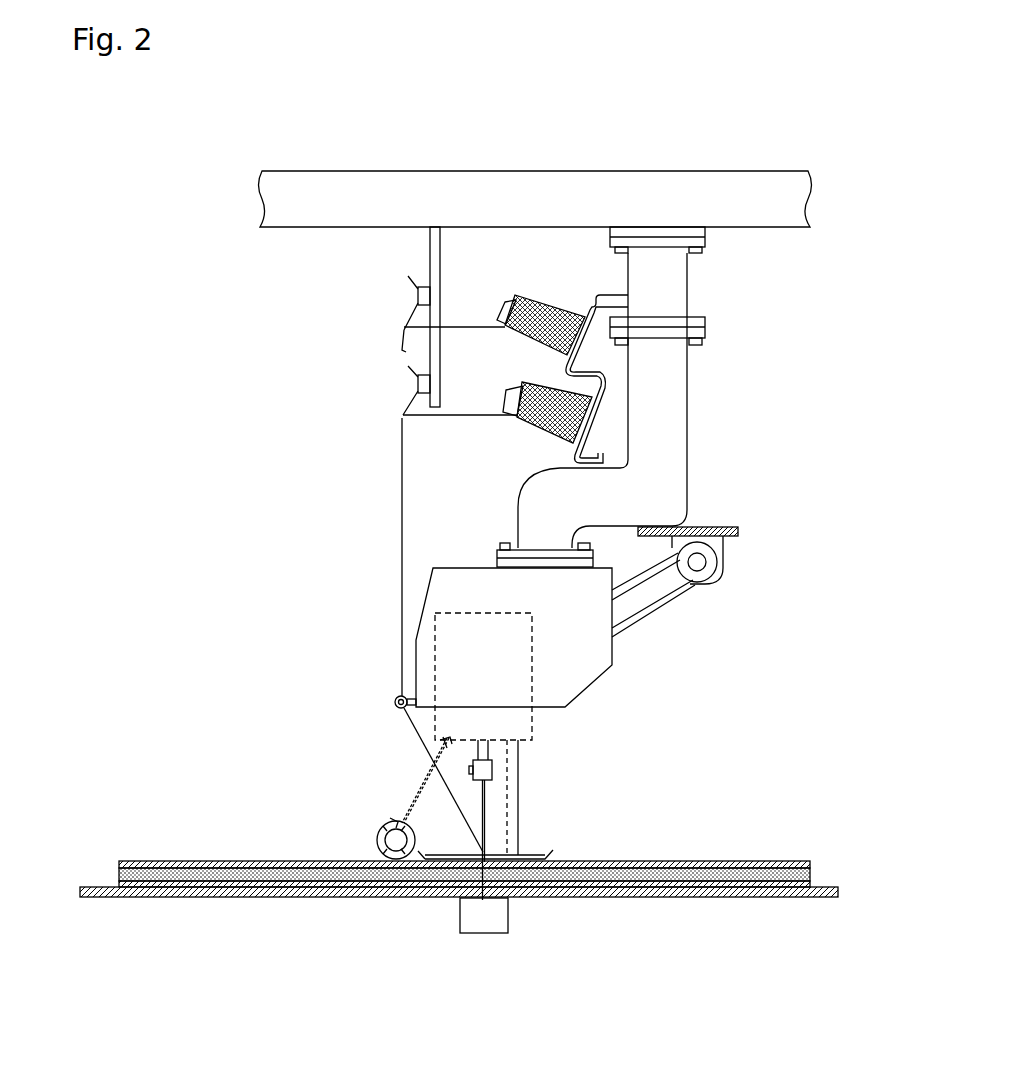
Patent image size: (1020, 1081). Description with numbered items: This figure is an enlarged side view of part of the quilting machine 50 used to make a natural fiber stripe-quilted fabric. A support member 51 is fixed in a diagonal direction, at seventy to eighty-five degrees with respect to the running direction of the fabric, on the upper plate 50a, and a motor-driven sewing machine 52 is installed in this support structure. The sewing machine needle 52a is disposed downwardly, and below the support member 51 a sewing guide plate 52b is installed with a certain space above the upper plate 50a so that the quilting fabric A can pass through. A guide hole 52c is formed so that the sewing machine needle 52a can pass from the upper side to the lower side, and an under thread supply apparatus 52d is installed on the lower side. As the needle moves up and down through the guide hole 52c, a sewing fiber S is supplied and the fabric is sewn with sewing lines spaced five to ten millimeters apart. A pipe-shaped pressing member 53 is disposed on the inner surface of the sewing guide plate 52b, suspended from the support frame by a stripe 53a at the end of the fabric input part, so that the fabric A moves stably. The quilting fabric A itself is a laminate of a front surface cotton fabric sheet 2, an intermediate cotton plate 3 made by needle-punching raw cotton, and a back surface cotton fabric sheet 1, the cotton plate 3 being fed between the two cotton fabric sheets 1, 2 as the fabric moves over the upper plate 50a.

The quilting machine 50 is at (606, 160).
The upper plate 50a is at (720, 897).
The support member 51 is at (440, 583).
The sewing machine 52 is at (513, 645).
The sewing machine needle 52a is at (482, 805).
The sewing guide plate 52b is at (530, 858).
The guide hole 52c is at (495, 853).
The under thread supply apparatus 52d is at (498, 915).
The pressing member 53 is at (378, 832).
The stripe 53a is at (418, 772).
The sewing fiber S is at (415, 726).
The quilting fabric A is at (464, 819).
The cotton fabric sheet 1 is at (150, 795).
The cotton fabric sheet 2 is at (167, 863).
The cotton plate 3 is at (207, 870).